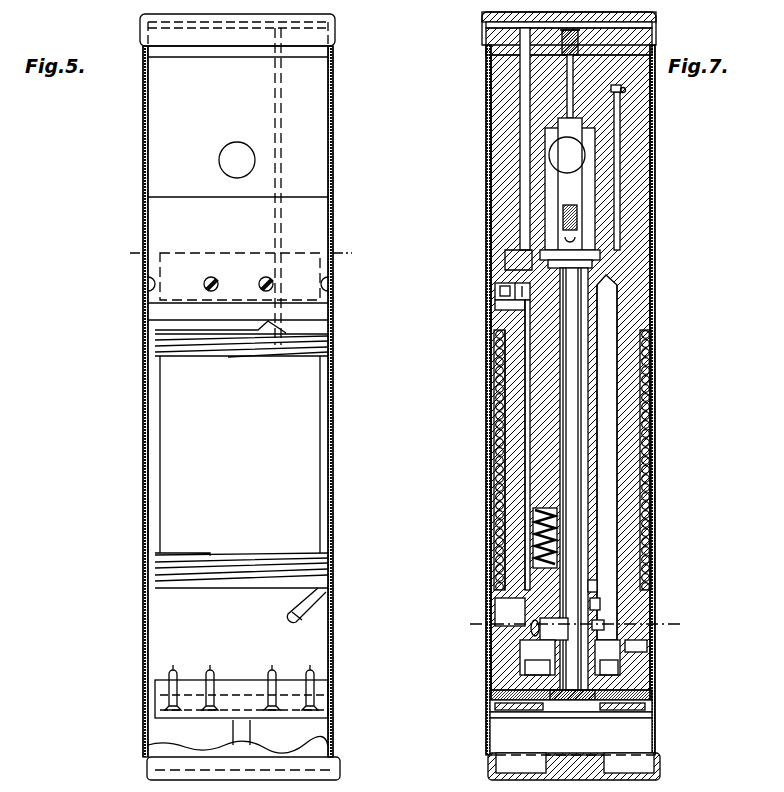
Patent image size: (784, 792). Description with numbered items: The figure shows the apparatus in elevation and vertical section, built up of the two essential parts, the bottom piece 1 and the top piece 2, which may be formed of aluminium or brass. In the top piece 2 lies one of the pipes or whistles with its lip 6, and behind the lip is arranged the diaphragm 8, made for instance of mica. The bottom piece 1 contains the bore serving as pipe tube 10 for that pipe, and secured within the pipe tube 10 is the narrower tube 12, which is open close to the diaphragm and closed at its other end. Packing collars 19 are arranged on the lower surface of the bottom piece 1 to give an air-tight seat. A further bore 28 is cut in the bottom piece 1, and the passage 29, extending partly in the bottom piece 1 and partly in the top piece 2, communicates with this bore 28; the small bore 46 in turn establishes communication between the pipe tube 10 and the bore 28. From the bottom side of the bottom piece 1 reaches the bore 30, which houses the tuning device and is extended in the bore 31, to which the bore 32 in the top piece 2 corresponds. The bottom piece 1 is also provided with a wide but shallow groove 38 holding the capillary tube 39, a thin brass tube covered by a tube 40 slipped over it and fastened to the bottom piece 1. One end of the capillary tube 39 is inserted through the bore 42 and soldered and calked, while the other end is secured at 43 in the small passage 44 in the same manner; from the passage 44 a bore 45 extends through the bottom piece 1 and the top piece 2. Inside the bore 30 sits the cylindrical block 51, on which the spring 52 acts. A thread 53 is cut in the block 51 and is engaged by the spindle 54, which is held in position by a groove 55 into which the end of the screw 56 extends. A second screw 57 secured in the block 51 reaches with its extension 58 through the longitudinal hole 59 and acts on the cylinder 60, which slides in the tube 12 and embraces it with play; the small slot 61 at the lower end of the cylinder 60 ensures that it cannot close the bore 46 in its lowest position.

In FIG. 5, the bottom piece 1 is at (175, 404).
In FIG. 5, the top piece 2 is at (165, 145).
In FIG. 5, the lip 6 is at (378, 252).
In FIG. 7, the diaphragm 8 is at (700, 630).
In FIG. 7, the pipe tube 10 is at (580, 308).
In FIG. 7, the narrower tube 12 is at (570, 365).
In FIG. 5, the packing collars 19 is at (165, 715).
In FIG. 7, the bore 28 is at (610, 423).
In FIG. 7, the passage 29 is at (617, 137).
In FIG. 7, the bore 30 is at (500, 690).
In FIG. 7, the bore 31 is at (535, 427).
In FIG. 7, the bore 32 is at (522, 140).
In FIG. 5, the groove 38 is at (160, 460).
In FIG. 5, the capillary tube 39 is at (160, 345).
In FIG. 5, the tube 40 is at (160, 517).
In FIG. 5, the bore 42 is at (305, 620).
In FIG. 5, the securing point 43 is at (330, 348).
In FIG. 5, the small passage 44 is at (333, 323).
In FIG. 5, the bore 45 is at (283, 210).
In FIG. 7, the small bore 46 is at (595, 648).
In FIG. 7, the cylindrical block 51 is at (495, 570).
In FIG. 7, the spring 52 is at (505, 520).
In FIG. 7, the thread 53 is at (495, 598).
In FIG. 7, the spindle 54 is at (525, 398).
In FIG. 7, the groove 55 is at (495, 305).
In FIG. 7, the screw 56 is at (492, 286).
In FIG. 7, the screw 57 is at (535, 630).
In FIG. 7, the extension 58 is at (595, 604).
In FIG. 7, the longitudinal hole 59 is at (540, 658).
In FIG. 7, the cylinder 60 is at (590, 588).
In FIG. 7, the small slot 61 is at (598, 625).